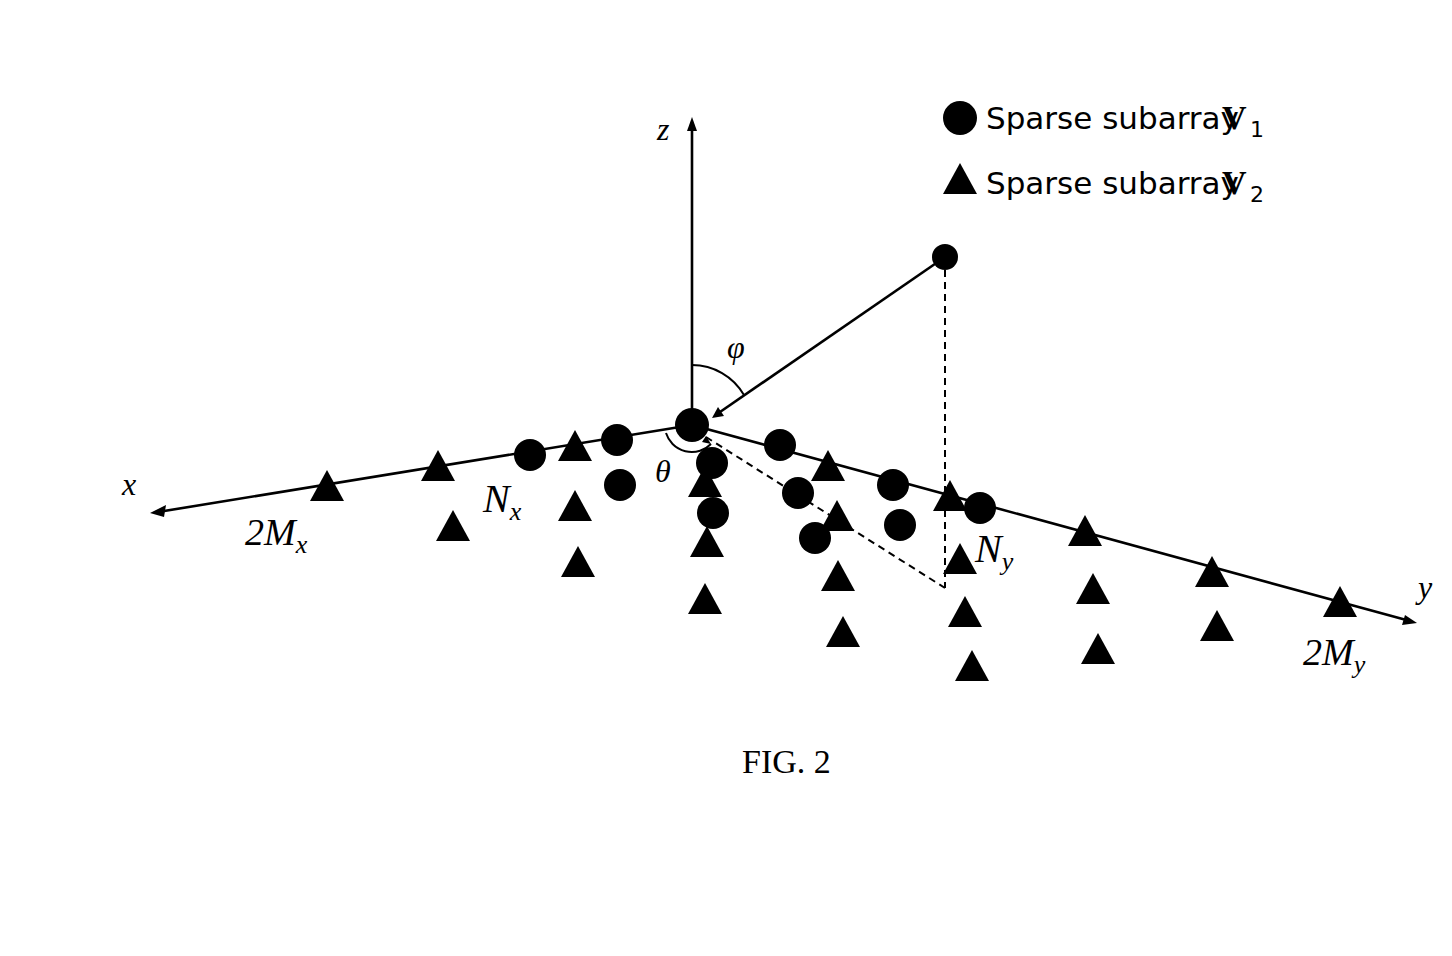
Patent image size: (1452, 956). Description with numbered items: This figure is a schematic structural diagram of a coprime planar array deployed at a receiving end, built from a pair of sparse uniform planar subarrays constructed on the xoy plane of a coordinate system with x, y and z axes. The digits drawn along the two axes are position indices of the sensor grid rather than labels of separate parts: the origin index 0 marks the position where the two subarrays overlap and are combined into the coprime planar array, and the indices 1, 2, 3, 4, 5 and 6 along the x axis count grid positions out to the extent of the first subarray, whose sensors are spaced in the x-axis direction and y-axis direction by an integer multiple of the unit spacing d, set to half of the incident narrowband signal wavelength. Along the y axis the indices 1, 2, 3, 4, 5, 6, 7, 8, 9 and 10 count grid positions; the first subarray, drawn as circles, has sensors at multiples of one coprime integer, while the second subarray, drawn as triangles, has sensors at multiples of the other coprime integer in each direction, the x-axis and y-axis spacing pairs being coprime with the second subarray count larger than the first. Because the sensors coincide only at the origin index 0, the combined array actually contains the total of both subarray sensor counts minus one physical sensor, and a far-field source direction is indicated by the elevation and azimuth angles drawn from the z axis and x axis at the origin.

The origin sensor of sparse subarray V1 0 is at (693, 409).
The sensor position 1 along x/y axis 1 is at (698, 426).
The sensor position 2 along x/y axis 2 is at (678, 444).
The sensor position 3 along x/y axis 3 is at (665, 462).
The sensor position 4 along x/y axis 4 is at (638, 473).
The sensor position 5 along x/y axis 5 is at (639, 487).
The sensor position 6 along x/y axis 6 is at (638, 502).
The sensor position 7 along y axis 7 is at (1158, 515).
The sensor position 8 along y axis 8 is at (1212, 552).
The sensor position 9 along y axis 9 is at (1281, 547).
The sensor position 10 along y axis 10 is at (1341, 585).